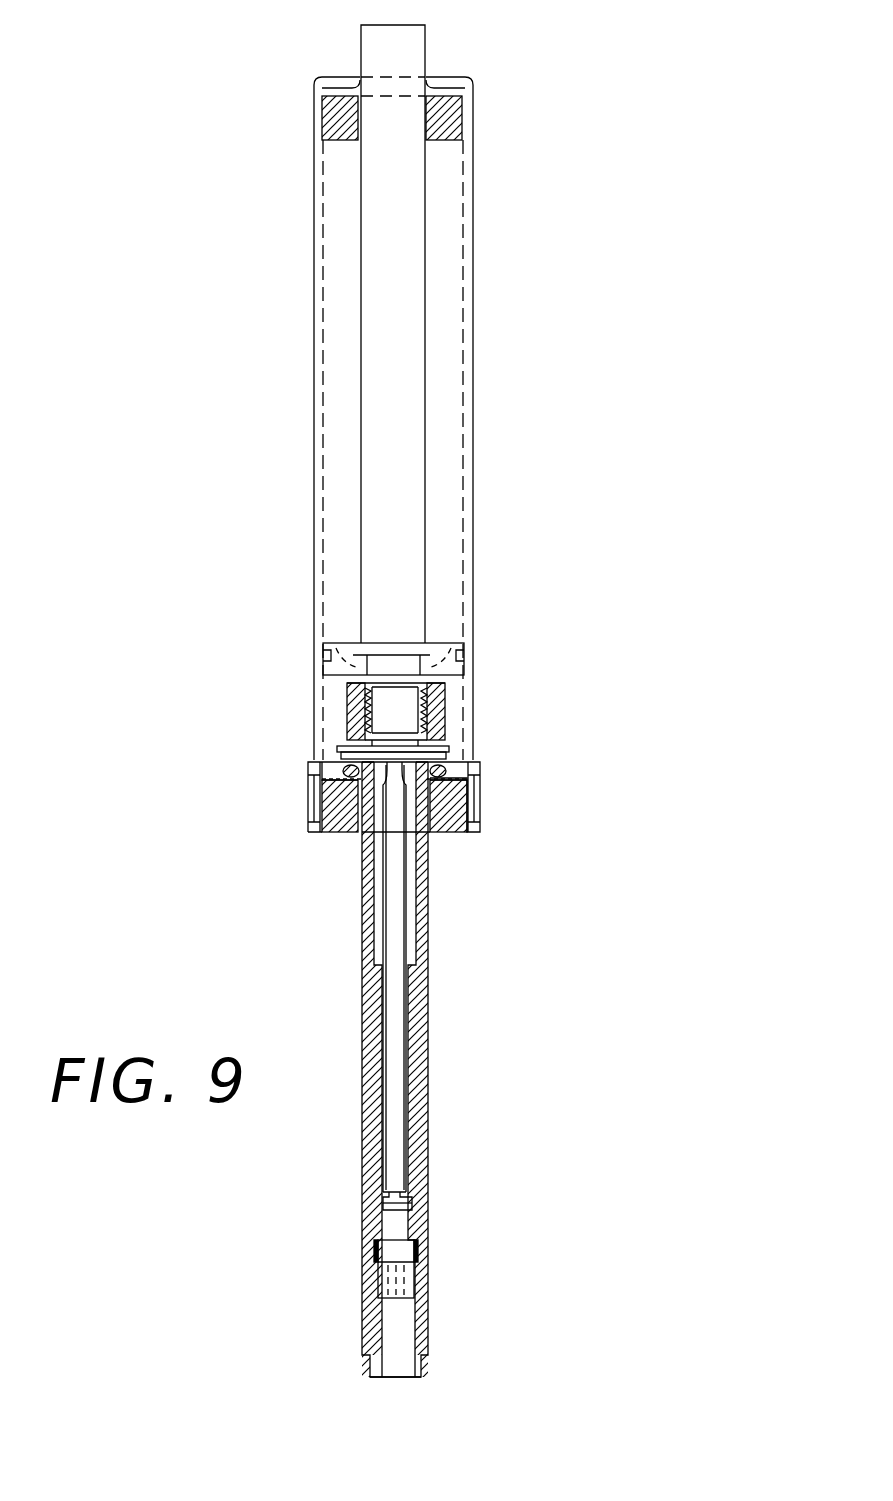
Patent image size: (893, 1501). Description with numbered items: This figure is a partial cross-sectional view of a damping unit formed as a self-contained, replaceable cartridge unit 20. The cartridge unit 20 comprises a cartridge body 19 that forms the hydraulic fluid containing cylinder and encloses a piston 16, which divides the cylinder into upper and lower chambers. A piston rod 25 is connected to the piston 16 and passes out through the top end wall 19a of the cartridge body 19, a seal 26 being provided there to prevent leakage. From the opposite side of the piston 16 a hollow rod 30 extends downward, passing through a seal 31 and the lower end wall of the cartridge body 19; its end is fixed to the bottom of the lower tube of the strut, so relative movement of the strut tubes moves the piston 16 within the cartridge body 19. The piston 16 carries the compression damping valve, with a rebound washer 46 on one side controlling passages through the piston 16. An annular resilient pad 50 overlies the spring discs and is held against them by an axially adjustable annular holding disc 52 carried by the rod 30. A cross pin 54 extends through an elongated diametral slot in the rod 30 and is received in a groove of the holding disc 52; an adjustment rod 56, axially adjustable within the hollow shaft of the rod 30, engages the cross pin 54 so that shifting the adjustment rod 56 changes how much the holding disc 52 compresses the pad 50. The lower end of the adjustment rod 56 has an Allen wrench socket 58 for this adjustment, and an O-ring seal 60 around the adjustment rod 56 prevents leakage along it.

The top end wall 19a is at (453, 78).
The seal 26 is at (452, 116).
The cartridge body 19 is at (313, 247).
The piston rod 25 is at (425, 447).
The cartridge unit 20 is at (306, 491).
The rebound washer 46 is at (433, 657).
The piston 16 is at (466, 652).
The annular resilient pad 50 is at (445, 703).
The annular holding disc 52 is at (450, 742).
The cross pin 54 is at (450, 767).
The seal 31 is at (463, 796).
The rod 30 is at (428, 910).
The adjustment rod 56 is at (407, 1056).
The O-ring seal 60 is at (410, 1206).
The Allen wrench socket 58 is at (407, 1286).